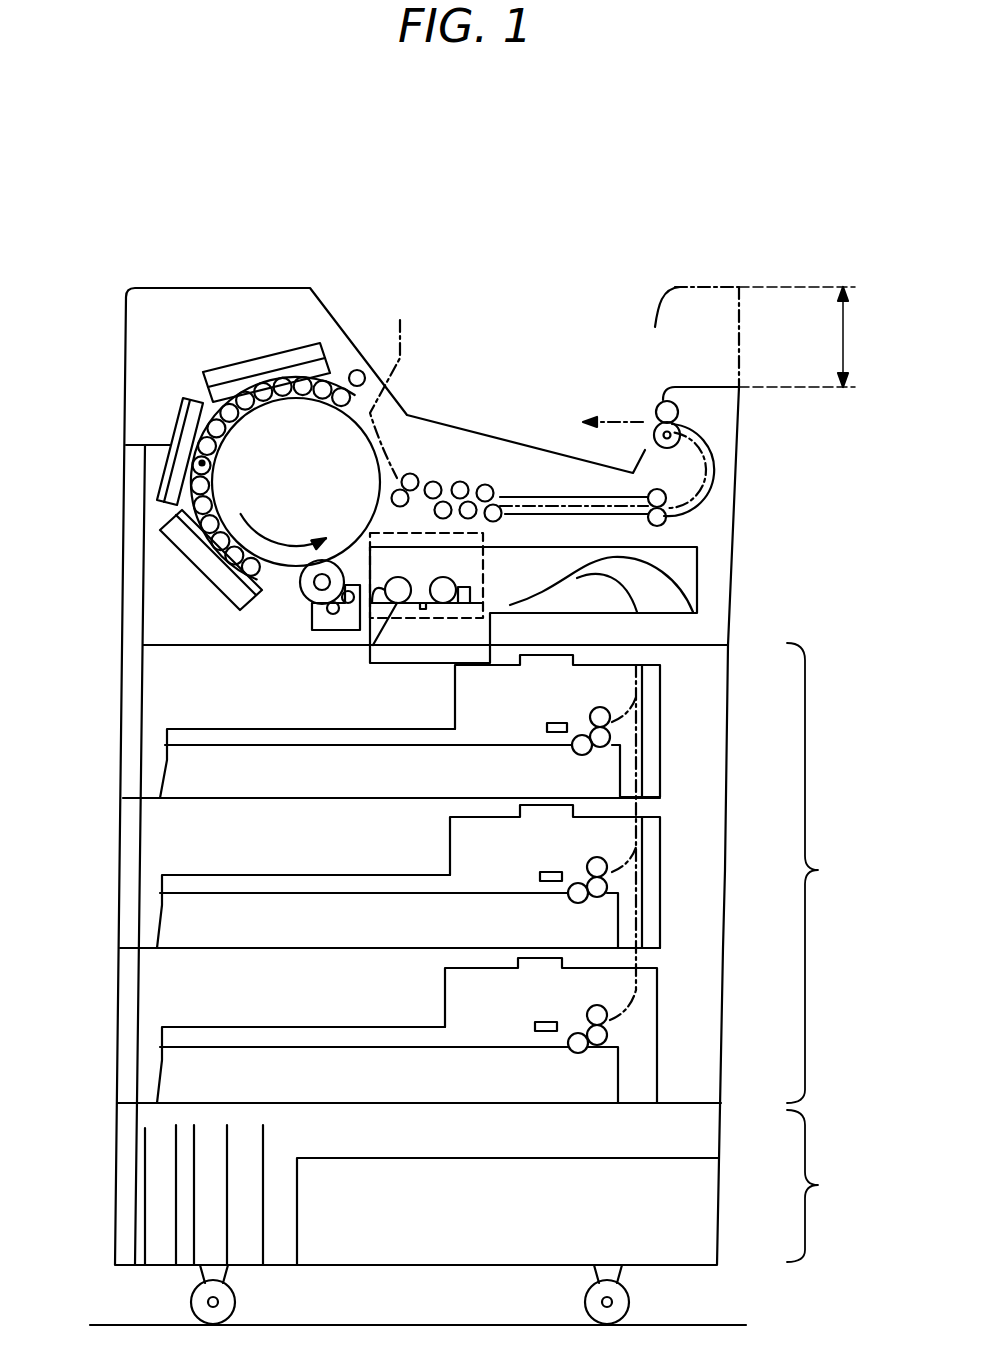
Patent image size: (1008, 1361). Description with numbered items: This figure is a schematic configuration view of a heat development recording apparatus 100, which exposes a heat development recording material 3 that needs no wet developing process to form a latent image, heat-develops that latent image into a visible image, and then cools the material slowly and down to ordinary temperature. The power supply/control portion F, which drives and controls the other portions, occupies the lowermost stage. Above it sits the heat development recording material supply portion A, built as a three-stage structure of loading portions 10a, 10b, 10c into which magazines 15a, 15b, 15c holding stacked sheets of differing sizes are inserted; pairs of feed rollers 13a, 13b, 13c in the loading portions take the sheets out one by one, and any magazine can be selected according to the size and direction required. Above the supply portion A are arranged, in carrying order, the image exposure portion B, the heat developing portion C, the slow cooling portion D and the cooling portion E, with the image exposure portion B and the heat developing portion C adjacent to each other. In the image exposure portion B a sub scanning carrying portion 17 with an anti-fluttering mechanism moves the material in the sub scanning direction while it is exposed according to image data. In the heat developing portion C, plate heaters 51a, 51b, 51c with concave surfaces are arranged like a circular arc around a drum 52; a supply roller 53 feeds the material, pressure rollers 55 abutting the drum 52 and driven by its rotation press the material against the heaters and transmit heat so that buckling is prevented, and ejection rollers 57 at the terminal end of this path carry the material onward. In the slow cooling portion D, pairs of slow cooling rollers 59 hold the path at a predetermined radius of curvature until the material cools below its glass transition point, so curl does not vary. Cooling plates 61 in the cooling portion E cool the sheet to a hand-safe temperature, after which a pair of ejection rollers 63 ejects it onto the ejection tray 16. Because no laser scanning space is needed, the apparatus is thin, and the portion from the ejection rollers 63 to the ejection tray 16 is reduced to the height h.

The heat development recording apparatus 100 is at (572, 240).
The heat developing portion C is at (190, 378).
The drum 52 is at (247, 463).
The plate heater 51a is at (187, 558).
The plate heater 51b is at (175, 428).
The plate heater 51c is at (265, 368).
The pressure rollers 55 is at (165, 478).
The ejection rollers 57 is at (365, 372).
The supply roller 53 is at (293, 602).
The heat development recording material 3 is at (391, 382).
The image exposure portion B is at (485, 562).
The sub scanning carrying portion 17 is at (368, 648).
The slow cooling portion D is at (448, 417).
The slow cooling rollers 59 is at (488, 480).
The cooling portion E is at (644, 419).
The ejection tray 16 is at (567, 493).
The cooling plates 61 is at (603, 497).
The ejection rollers 63 is at (685, 413).
The height h is at (803, 337).
The heat development recording material supply portion A is at (482, 873).
The loading portion 10a is at (454, 726).
The loading portion 10b is at (453, 876).
The loading portion 10c is at (471, 1030).
The feed rollers 13a is at (587, 722).
The feed rollers 13b is at (582, 872).
The feed rollers 13c is at (577, 1022).
The magazine 15a is at (362, 757).
The magazine 15b is at (342, 905).
The magazine 15c is at (347, 1055).
The power supply/control portion F is at (466, 1214).